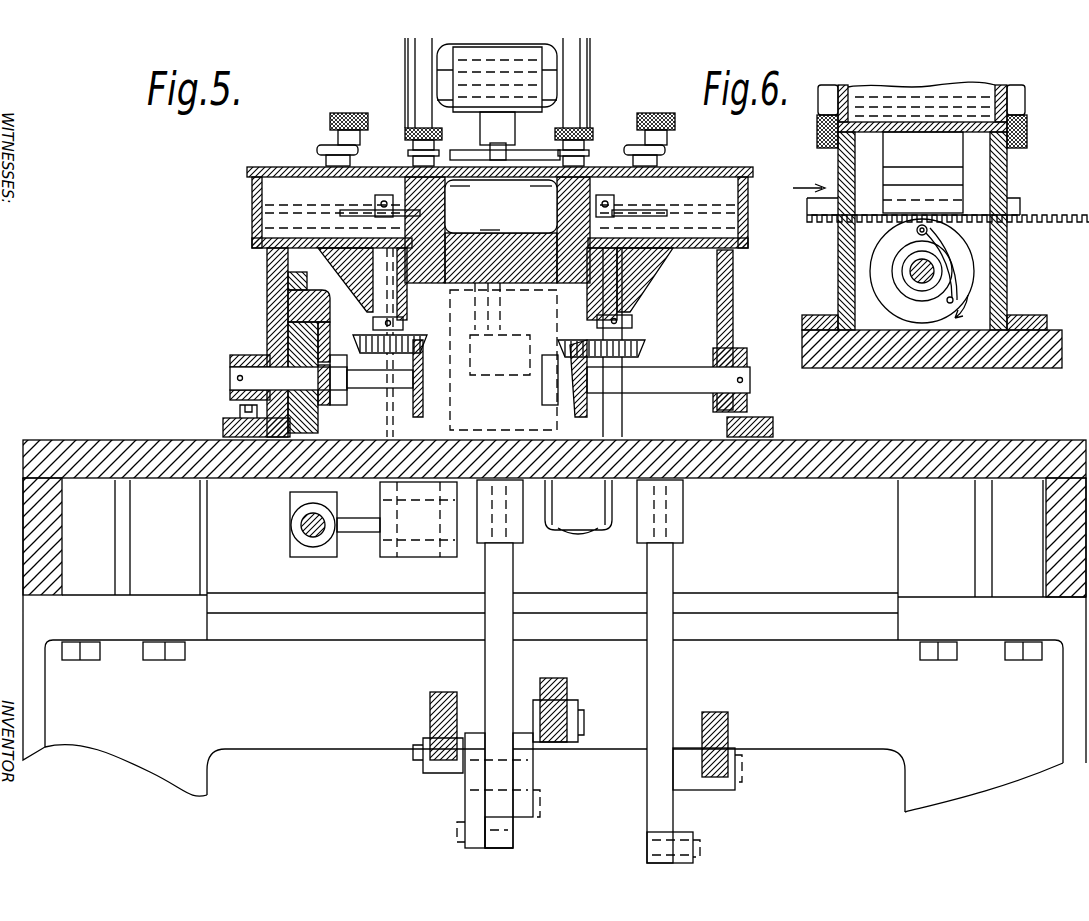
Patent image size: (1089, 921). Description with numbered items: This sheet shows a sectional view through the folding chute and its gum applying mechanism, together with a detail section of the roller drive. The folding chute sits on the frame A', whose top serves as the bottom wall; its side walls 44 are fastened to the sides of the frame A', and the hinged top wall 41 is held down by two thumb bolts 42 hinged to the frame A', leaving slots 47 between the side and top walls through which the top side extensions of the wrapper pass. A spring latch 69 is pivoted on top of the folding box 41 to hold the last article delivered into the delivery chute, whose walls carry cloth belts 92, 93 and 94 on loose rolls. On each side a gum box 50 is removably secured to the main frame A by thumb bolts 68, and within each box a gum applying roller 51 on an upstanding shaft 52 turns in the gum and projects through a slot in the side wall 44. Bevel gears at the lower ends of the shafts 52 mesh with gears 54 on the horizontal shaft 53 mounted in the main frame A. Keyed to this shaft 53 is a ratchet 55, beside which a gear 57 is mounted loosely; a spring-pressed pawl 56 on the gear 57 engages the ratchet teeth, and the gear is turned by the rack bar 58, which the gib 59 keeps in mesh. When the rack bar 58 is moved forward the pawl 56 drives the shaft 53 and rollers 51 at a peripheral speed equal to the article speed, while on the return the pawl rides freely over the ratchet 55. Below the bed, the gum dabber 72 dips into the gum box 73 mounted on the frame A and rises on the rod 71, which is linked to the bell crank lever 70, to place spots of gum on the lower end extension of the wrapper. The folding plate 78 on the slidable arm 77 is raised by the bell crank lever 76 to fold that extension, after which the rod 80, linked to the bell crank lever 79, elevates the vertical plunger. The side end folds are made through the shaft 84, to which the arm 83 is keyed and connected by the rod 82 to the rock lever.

In FIG. 5, the top wall 41 is at (527, 202).
In FIG. 5, the thumb bolts 42 is at (407, 128).
In FIG. 5, the side walls 44 is at (472, 202).
In FIG. 5, the slots 47 is at (497, 230).
In FIG. 5, the gum box 50 is at (252, 190).
In FIG. 6, the gum box 50 is at (845, 95).
In FIG. 5, the gum applying roller 51 is at (350, 212).
In FIG. 5, the upstanding shaft 52 is at (388, 317).
In FIG. 5, the horizontal shaft 53 is at (230, 378).
In FIG. 6, the horizontal shaft 53 is at (905, 275).
In FIG. 5, the gears 54 is at (340, 400).
In FIG. 5, the ratchet 55 is at (324, 405).
In FIG. 6, the ratchet 55 is at (950, 295).
In FIG. 5, the pawl 56 is at (300, 330).
In FIG. 6, the pawl 56 is at (935, 238).
In FIG. 5, the gear 57 is at (300, 437).
In FIG. 6, the gear 57 is at (965, 260).
In FIG. 5, the rack bar 58 is at (288, 282).
In FIG. 6, the rack bar 58 is at (825, 205).
In FIG. 5, the gib 59 is at (275, 268).
In FIG. 6, the gib 59 is at (928, 195).
In FIG. 5, the thumb bolts 68 is at (349, 113).
In FIG. 6, the thumb bolts 68 is at (822, 95).
In FIG. 5, the spring latch 69 is at (495, 125).
In FIG. 5, the bell crank lever 70 is at (728, 722).
In FIG. 5, the rod 71 is at (673, 662).
In FIG. 5, the gum dabber 72 is at (511, 355).
In FIG. 5, the gum box 73 is at (401, 342).
In FIG. 5, the bell crank lever 76 is at (567, 688).
In FIG. 5, the slidable arm 77 is at (513, 658).
In FIG. 5, the plate 78 is at (514, 307).
In FIG. 5, the bell crank lever 79 is at (430, 712).
In FIG. 5, the rod 80 is at (500, 838).
In FIG. 5, the rod 82 is at (290, 528).
In FIG. 5, the arm 83 is at (360, 532).
In FIG. 5, the shaft 84 is at (433, 557).
In FIG. 5, the cloth belt 92 is at (555, 52).
In FIG. 5, the cloth belt 93 is at (412, 128).
In FIG. 5, the cloth belt 94 is at (585, 128).
In FIG. 5, the main frame A is at (554, 539).
In FIG. 6, the main frame A is at (932, 282).
In FIG. 5, the frame A' is at (496, 221).